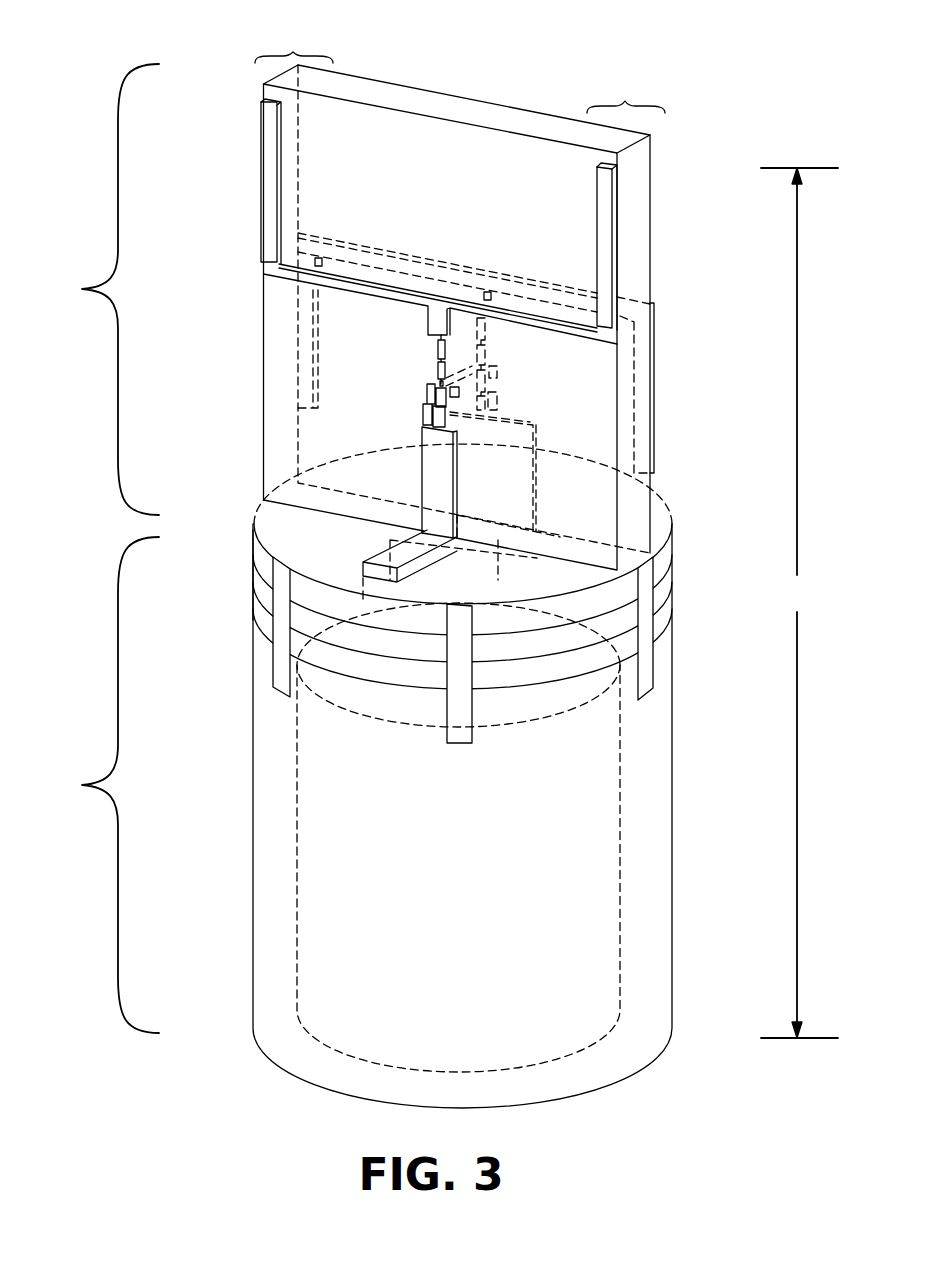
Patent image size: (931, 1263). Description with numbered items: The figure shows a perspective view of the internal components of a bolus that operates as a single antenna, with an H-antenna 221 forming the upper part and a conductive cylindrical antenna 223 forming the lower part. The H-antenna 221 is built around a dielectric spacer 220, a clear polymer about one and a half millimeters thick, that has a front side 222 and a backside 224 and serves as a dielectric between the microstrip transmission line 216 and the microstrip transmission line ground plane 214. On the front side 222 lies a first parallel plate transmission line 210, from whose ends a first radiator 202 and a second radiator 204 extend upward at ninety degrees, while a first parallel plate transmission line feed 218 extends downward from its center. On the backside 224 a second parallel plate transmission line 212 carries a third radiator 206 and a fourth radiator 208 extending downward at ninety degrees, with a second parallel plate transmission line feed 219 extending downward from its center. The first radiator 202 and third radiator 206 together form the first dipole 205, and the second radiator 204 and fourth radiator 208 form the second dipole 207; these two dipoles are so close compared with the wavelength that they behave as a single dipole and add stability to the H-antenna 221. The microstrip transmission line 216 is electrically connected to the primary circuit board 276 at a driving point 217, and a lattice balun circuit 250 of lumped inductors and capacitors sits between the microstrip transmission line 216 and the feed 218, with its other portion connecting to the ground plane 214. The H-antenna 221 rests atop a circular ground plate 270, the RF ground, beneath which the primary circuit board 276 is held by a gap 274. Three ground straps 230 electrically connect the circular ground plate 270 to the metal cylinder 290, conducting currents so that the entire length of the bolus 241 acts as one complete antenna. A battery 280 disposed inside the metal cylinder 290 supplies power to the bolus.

The first radiator 202 is at (262, 193).
The second radiator 204 is at (593, 208).
The first dipole 205 is at (294, 44).
The third radiator 206 is at (300, 376).
The second dipole 207 is at (626, 93).
The fourth radiator 208 is at (656, 395).
The first parallel plate transmission line 210 is at (403, 292).
The second parallel plate transmission line 212 is at (362, 250).
The microstrip transmission line ground plane 214 is at (527, 422).
The microstrip transmission line 216 is at (433, 495).
The driving point 217 is at (367, 573).
The first parallel plate transmission line feed 218 is at (432, 325).
The second parallel plate transmission line feed 219 is at (473, 280).
The dielectric spacer 220 is at (378, 95).
The H-antenna 221 is at (97, 289).
The front side 222 is at (263, 478).
The conductive cylindrical antenna 223 is at (97, 785).
The backside 224 is at (650, 205).
The ground straps 230 is at (656, 568).
The entire length of the bolus 241 is at (799, 603).
The lattice balun circuit 250 is at (511, 388).
The circular ground plate 270 is at (258, 555).
The gap 274 is at (257, 584).
The primary circuit board 276 is at (667, 612).
The battery 280 is at (295, 840).
The metal cylinder 290 is at (674, 846).